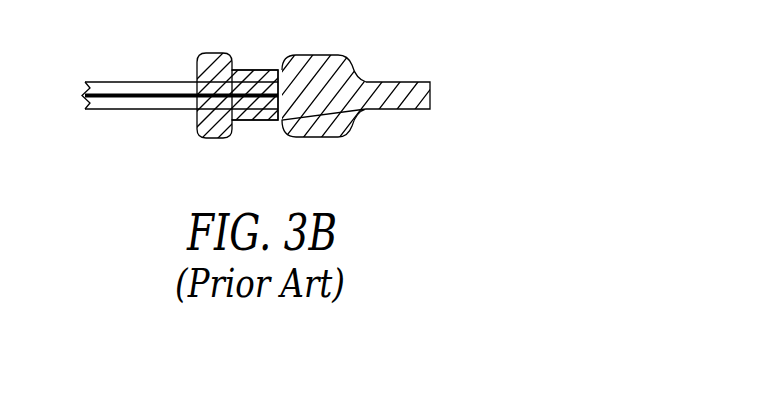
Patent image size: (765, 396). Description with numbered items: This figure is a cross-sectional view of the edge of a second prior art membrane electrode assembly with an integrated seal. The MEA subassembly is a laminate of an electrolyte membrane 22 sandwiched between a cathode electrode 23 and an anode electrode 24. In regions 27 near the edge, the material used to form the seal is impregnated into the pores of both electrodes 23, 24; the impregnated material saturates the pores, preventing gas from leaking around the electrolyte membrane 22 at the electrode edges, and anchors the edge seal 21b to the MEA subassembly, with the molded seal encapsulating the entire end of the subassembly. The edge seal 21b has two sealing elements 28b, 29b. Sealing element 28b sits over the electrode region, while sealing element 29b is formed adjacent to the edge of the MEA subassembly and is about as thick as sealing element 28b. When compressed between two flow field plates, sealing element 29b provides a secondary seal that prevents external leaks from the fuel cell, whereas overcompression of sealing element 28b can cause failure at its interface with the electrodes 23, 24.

The edge seal 21b is at (431, 95).
The electrolyte membrane 22 is at (138, 93).
The cathode electrode 23 is at (173, 84).
The anode electrode 24 is at (127, 106).
The regions 27 is at (266, 103).
The sealing element 28b is at (219, 51).
The sealing element 29b is at (317, 53).